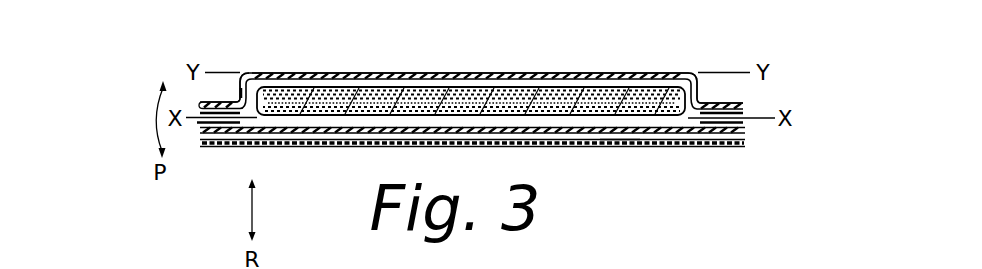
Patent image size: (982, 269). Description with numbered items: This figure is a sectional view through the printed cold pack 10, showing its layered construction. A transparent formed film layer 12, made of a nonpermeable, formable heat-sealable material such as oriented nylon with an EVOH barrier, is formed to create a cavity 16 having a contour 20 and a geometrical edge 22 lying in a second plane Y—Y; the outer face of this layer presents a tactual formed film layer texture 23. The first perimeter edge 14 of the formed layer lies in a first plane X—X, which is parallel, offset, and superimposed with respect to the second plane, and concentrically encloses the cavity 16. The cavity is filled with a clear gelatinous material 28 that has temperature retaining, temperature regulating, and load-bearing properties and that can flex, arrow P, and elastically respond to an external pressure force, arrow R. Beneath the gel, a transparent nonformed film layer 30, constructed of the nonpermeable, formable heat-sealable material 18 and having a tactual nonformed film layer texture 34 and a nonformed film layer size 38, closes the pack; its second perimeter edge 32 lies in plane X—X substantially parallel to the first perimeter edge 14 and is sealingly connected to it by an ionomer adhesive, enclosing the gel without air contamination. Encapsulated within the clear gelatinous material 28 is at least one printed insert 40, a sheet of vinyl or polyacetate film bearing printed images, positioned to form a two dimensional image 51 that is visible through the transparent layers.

The printed cold pack 10 is at (152, 72).
The transparent formed film layer 12 is at (318, 73).
The first perimeter edge 14 is at (200, 102).
The cavity 16 is at (250, 73).
The nonpermeable, formable heat-sealable material 18 is at (533, 68).
The contour 20 is at (700, 68).
The geometrical edge 22 is at (697, 87).
The tactual formed film layer texture 23 is at (659, 69).
The clear gelatinous material 28 is at (412, 92).
The transparent nonformed film layer 30 is at (548, 148).
The second perimeter edge 32 is at (214, 147).
The tactual nonformed film layer texture 34 is at (622, 145).
The nonformed film layer size 38 is at (488, 88).
The printed insert 40 is at (604, 95).
The two dimensional image 51 is at (360, 92).